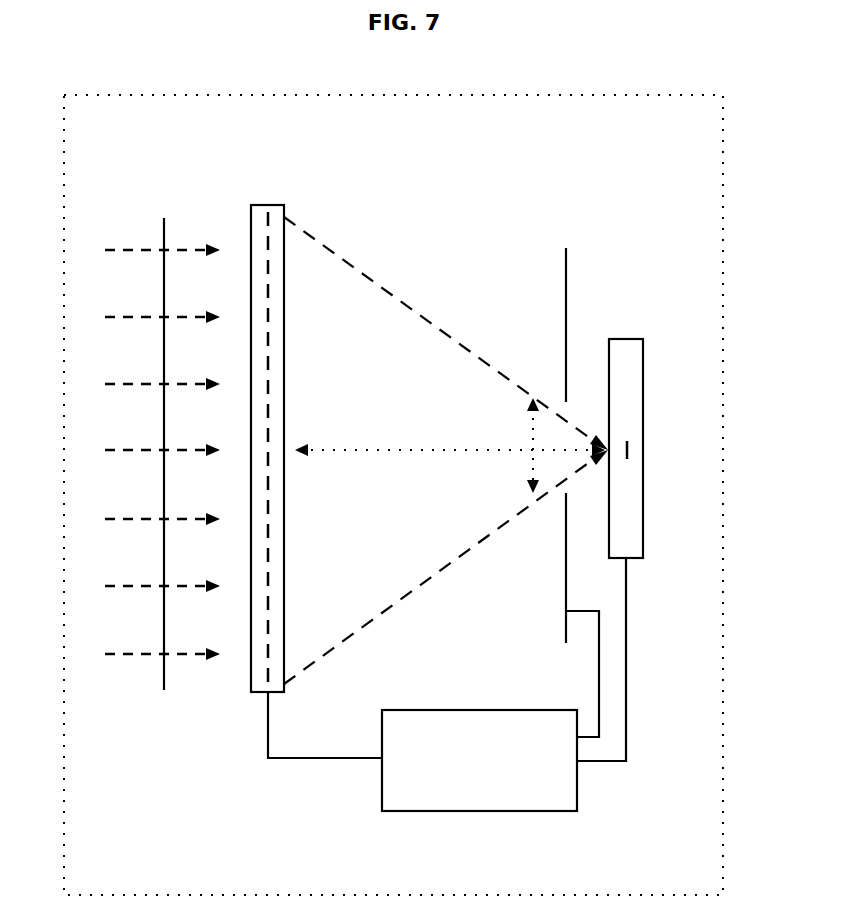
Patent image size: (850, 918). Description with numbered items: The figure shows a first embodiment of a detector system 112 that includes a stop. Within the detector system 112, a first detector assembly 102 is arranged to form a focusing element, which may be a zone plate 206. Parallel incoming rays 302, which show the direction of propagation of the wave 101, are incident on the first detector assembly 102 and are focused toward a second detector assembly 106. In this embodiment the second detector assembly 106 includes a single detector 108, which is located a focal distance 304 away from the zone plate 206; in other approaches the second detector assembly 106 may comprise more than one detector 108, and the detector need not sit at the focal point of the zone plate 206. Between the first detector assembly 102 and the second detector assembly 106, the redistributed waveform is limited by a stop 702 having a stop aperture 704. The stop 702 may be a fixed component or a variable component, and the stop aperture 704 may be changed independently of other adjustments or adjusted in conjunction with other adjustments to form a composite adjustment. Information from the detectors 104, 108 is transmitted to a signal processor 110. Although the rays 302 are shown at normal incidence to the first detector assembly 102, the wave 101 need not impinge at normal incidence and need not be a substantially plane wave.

The wave 101 is at (163, 232).
The first detector assembly 102 is at (268, 205).
The detector 104 is at (268, 228).
The second detector assembly 106 is at (622, 338).
The detector 108 is at (627, 452).
The signal processor 110 is at (495, 812).
The detector system 112 is at (723, 322).
The zone plate 206 is at (258, 693).
The parallel incoming rays 302 is at (143, 656).
The focal distance 304 is at (340, 445).
The stop 702 is at (565, 272).
The stop aperture 704 is at (517, 445).